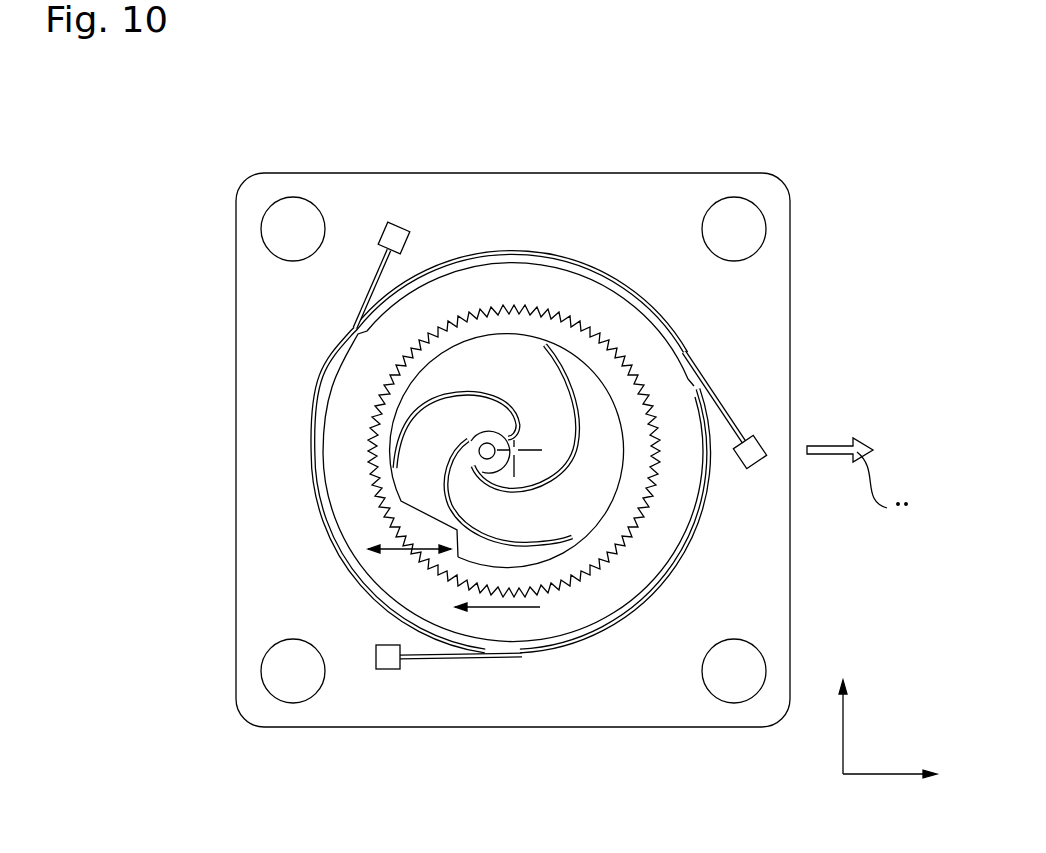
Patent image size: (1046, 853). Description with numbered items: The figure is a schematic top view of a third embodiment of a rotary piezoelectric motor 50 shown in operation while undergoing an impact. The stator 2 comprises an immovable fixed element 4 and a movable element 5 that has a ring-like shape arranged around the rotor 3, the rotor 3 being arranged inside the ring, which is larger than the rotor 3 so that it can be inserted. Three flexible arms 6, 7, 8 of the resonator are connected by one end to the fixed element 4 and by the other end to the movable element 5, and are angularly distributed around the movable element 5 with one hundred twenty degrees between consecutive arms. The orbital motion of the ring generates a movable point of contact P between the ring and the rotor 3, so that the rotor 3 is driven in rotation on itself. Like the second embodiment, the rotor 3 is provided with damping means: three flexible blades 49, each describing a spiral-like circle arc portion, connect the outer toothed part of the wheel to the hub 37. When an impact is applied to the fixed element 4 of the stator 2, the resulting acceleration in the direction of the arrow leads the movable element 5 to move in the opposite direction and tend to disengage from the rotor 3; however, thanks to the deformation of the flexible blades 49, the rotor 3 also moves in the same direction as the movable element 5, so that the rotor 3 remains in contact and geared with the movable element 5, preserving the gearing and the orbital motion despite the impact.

The piezoelectric motor 50 is at (213, 163).
The stator 2 is at (762, 378).
The rotor 3 is at (640, 472).
The fixed element 4 is at (565, 298).
The movable element 5 is at (650, 557).
The flexible arm 6 is at (337, 341).
The flexible arm 7 is at (483, 658).
The flexible arm 8 is at (688, 342).
The hub 37 is at (486, 444).
The flexible blades 49 is at (520, 428).
The point of contact P is at (370, 448).